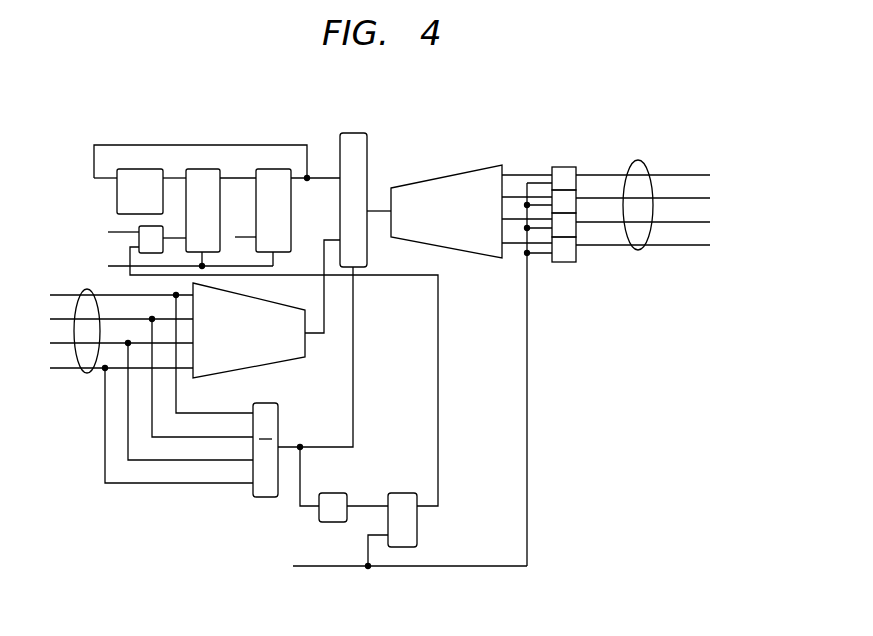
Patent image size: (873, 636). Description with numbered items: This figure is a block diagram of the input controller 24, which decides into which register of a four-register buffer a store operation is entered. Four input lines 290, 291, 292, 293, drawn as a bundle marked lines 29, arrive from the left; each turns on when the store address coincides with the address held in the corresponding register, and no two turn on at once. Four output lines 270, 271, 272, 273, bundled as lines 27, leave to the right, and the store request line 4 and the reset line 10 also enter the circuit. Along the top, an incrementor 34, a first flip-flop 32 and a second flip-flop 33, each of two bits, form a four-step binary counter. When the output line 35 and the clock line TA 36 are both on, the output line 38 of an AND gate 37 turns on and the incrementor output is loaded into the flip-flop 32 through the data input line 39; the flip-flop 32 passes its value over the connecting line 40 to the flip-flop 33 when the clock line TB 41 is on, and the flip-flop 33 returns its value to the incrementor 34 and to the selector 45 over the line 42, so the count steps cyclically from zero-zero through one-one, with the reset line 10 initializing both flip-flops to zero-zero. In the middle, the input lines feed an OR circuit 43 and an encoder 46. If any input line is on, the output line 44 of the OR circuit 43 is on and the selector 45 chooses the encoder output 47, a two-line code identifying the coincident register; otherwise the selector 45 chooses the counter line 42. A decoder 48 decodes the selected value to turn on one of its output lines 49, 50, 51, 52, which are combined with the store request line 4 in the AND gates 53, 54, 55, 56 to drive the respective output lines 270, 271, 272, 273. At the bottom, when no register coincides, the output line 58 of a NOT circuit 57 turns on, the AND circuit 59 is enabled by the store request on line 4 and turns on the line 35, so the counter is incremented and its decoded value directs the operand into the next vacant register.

The store request line 4 is at (323, 566).
The reset line 10 is at (108, 266).
The input controller 24 is at (231, 126).
The lines 27 is at (640, 250).
The lines 29 is at (87, 373).
The flip-flop 32 is at (212, 168).
The flip-flop 33 is at (294, 213).
The incrementor 34 is at (139, 168).
The output line 35 is at (438, 355).
The clock line TA 36 is at (138, 241).
The AND gate 37 is at (140, 224).
The output line 38 is at (176, 240).
The data input line 39 is at (173, 177).
The flip-flop connecting line 40 is at (243, 169).
The clock line TB 41 is at (254, 236).
The line 42 is at (320, 177).
The OR circuit 43 is at (266, 403).
The output line 44 is at (313, 447).
The selector 45 is at (349, 133).
The encoder 46 is at (305, 358).
The output 47 is at (324, 333).
The decoder 48 is at (453, 172).
The output line 49 is at (502, 172).
The output line 50 is at (505, 192).
The output line 51 is at (509, 233).
The output line 52 is at (503, 256).
The AND gate 53 is at (577, 181).
The AND gate 54 is at (577, 204).
The AND gate 55 is at (577, 228).
The AND gate 56 is at (577, 252).
The NOT circuit 57 is at (333, 493).
The output line 58 is at (368, 505).
The AND circuit 59 is at (400, 493).
The line 270 is at (656, 175).
The line 271 is at (656, 198).
The line 272 is at (656, 222).
The line 273 is at (656, 245).
The line 290 is at (75, 295).
The line 291 is at (75, 319).
The line 292 is at (75, 343).
The line 293 is at (75, 368).